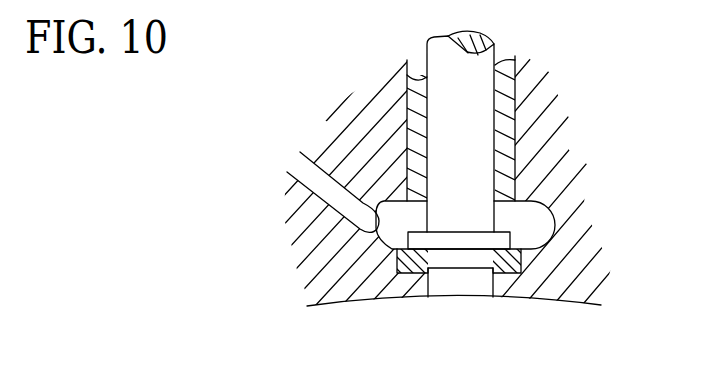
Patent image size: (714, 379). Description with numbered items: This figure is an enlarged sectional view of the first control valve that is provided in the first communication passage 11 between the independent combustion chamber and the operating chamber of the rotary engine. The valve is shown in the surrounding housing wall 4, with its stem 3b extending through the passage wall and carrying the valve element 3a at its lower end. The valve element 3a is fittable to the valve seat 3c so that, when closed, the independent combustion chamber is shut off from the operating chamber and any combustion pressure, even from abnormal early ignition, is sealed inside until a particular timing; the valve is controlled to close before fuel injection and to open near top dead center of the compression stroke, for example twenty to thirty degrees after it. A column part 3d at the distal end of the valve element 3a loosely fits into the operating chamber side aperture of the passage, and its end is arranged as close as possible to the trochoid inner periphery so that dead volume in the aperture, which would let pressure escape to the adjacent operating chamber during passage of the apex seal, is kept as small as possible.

The housing / fixed member 4 is at (547, 155).
The first communication passage 11 is at (318, 180).
The stem 3b is at (478, 112).
The valve element 3a is at (500, 240).
The valve seat 3c is at (510, 270).
The column part 3d is at (462, 288).